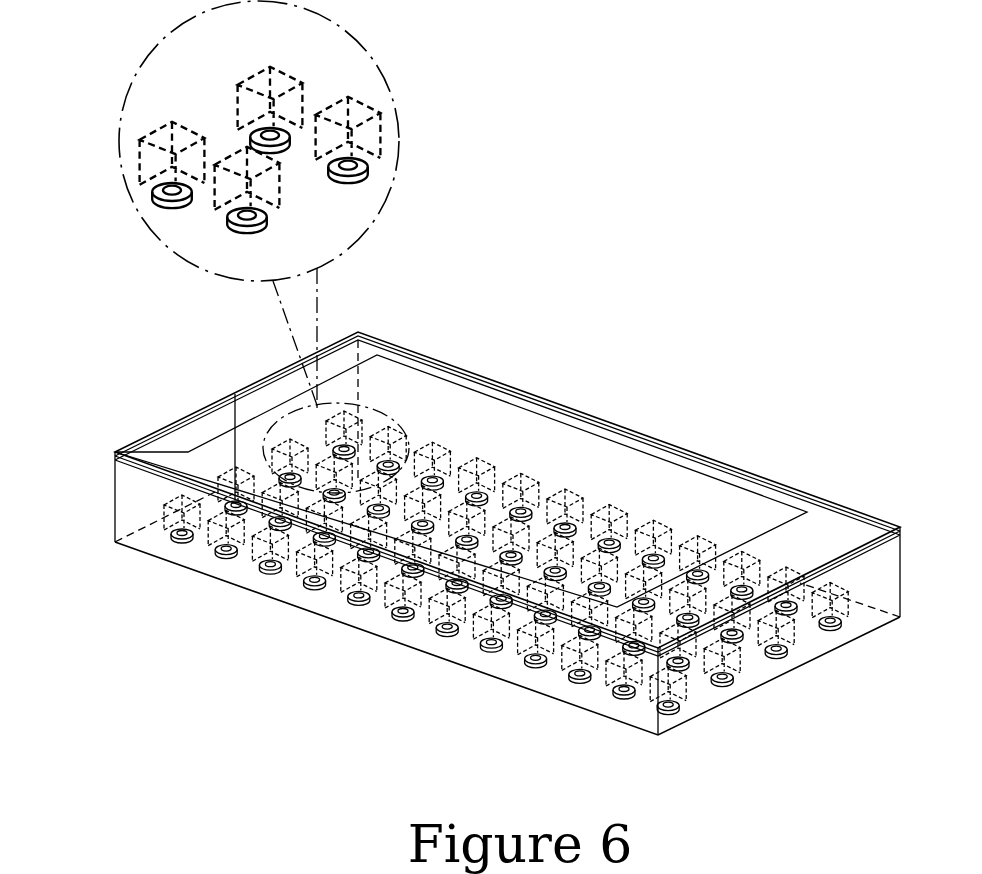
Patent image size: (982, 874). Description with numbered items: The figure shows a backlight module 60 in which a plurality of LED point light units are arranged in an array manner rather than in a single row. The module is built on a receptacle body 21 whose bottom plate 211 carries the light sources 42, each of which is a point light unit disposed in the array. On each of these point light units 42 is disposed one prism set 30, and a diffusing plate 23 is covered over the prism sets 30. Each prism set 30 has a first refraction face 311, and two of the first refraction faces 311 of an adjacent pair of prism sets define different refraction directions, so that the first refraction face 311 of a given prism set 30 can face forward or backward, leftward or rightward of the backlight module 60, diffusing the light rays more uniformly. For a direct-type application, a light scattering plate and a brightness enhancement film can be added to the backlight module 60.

The backlight module 60 is at (778, 386).
The receptacle body 21 is at (114, 498).
The bottom plate 211 is at (187, 552).
The diffusing plate 23 is at (197, 427).
The prism set 30 is at (357, 107).
The first refraction face 311 is at (297, 97).
The light source 42 is at (313, 583).